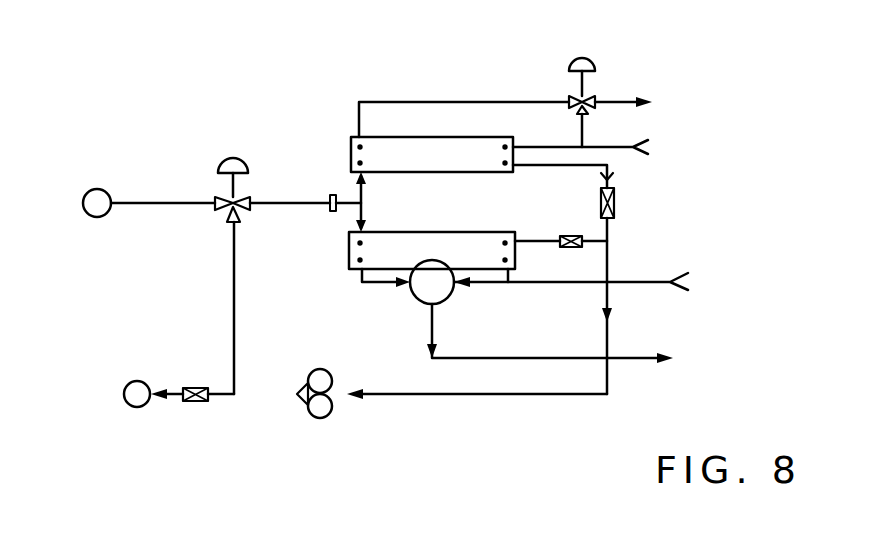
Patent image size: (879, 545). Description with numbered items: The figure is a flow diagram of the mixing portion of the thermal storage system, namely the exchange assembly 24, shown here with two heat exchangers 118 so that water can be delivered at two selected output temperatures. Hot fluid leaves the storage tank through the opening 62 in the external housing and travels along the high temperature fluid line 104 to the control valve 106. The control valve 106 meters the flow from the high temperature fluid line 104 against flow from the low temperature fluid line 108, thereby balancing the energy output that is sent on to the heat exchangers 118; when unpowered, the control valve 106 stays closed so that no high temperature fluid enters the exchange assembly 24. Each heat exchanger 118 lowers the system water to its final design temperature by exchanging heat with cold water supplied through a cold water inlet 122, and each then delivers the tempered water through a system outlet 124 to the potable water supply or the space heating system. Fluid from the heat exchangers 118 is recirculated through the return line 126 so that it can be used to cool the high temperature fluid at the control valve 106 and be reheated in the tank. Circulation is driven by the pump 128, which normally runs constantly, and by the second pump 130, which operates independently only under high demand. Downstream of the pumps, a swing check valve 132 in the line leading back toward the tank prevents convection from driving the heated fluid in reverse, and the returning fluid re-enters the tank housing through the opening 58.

The exchange assembly 24 is at (138, 108).
The opening 58 is at (125, 387).
The opening 62 is at (83, 197).
The high temperature fluid line 104 is at (170, 205).
The control valve 106 is at (247, 157).
The low temperature fluid line 108 is at (234, 290).
The heat exchanger 118 is at (450, 138).
The cold water inlet 122 is at (610, 147).
The system outlet 124 is at (607, 101).
The return line 126 is at (468, 395).
The pump 128 is at (311, 416).
The second pump 130 is at (310, 374).
The swing check valve 132 is at (179, 424).